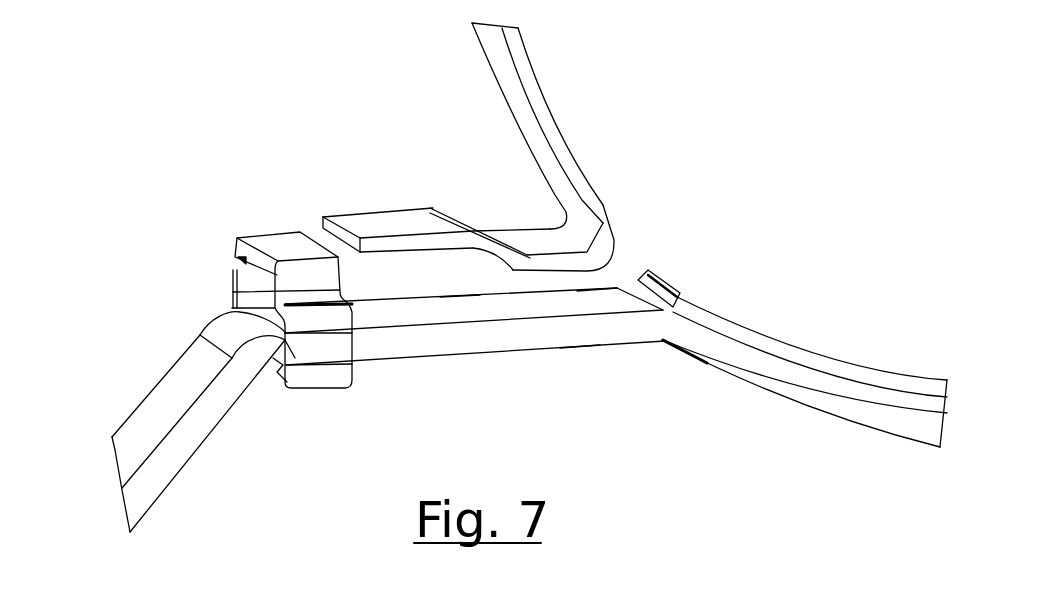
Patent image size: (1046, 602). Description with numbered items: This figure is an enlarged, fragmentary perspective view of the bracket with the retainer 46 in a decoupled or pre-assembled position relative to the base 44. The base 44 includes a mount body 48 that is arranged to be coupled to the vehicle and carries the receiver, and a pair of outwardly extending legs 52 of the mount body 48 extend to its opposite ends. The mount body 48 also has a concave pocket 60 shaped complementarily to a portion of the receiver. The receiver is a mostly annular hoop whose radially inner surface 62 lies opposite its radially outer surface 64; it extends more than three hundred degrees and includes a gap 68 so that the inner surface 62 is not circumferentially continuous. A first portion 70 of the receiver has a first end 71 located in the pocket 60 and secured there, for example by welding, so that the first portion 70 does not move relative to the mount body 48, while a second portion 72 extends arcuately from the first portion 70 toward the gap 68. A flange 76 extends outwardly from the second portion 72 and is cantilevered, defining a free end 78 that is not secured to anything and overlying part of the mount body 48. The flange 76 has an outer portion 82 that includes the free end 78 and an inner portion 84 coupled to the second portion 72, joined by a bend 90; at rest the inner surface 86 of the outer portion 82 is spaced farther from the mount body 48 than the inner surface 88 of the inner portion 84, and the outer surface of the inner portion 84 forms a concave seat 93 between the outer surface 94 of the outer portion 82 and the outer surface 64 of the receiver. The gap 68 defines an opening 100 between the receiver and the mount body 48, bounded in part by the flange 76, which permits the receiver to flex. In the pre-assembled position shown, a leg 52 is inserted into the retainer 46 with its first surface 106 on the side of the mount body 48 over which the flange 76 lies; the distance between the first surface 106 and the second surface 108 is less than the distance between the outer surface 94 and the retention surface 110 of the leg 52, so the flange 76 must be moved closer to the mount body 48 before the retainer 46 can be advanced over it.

The base 44 is at (792, 381).
The retainer 46 is at (203, 309).
The mount body 48 is at (715, 363).
The legs 52 is at (140, 492).
The concave pocket 60 is at (818, 387).
The radially inner surface 62 is at (540, 126).
The radially outer surface 64 is at (520, 127).
The gap 68 is at (618, 242).
The first portion 70 is at (712, 322).
The first end 71 is at (681, 288).
The second portion 72 is at (522, 62).
The flange 76 is at (483, 216).
The free end 78 is at (321, 228).
The outer portion 82 is at (431, 191).
The inner portion 84 is at (516, 198).
The inner surface 86 is at (393, 253).
The inner surface 88 is at (577, 271).
The bend 90 is at (495, 250).
The seat 93 is at (527, 234).
The outer surface 94 is at (376, 218).
The opening 100 is at (457, 273).
The first surface 106 is at (232, 268).
The second surface 108 is at (277, 368).
The retention surface 110 is at (580, 351).